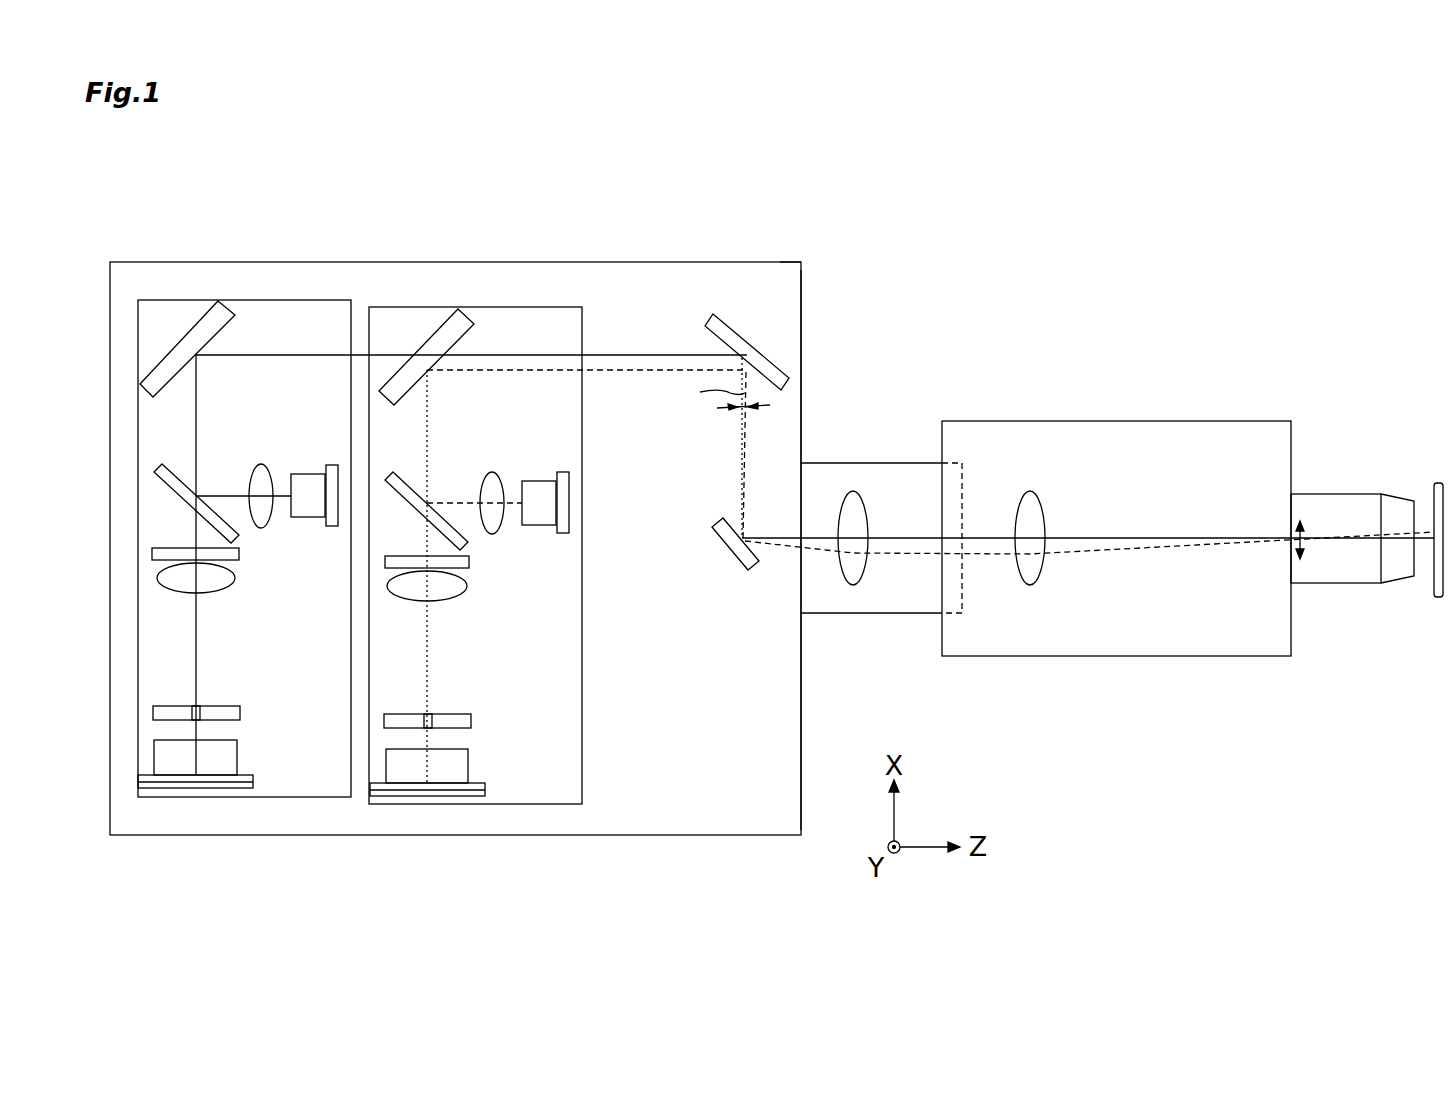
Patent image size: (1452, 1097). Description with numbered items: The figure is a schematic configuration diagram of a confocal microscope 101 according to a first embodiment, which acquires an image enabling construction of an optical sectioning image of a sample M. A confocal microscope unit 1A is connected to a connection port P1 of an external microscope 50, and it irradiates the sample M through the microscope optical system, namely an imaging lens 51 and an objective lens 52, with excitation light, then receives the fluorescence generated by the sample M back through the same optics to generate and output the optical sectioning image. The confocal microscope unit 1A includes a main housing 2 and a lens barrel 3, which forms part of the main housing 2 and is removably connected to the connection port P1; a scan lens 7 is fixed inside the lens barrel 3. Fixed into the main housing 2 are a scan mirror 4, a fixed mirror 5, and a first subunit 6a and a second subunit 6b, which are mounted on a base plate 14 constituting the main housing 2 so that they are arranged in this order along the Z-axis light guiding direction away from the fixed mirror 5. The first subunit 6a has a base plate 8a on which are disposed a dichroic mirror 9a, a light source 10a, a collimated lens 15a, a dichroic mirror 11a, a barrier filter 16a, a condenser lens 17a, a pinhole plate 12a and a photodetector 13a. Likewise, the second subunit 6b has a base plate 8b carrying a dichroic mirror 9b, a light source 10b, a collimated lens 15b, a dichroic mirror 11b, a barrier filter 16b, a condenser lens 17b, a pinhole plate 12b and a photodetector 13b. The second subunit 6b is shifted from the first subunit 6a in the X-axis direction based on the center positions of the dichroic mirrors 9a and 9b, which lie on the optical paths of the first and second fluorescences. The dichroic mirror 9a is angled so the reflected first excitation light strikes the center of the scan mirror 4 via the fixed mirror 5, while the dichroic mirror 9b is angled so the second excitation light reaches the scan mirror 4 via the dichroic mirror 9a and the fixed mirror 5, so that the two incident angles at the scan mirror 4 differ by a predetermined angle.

The confocal microscope 101 is at (1050, 258).
The confocal microscope unit 1A is at (793, 259).
The main housing 2 is at (677, 262).
The lens barrel 3 is at (877, 462).
The scan mirror 4 is at (733, 566).
The fixed mirror 5 is at (735, 320).
The first subunit 6a is at (557, 805).
The second subunit 6b is at (325, 800).
The scan lens 7 is at (851, 585).
The base plate 8a is at (426, 285).
The base plate 8b is at (187, 281).
The dichroic mirror 9a is at (437, 325).
The dichroic mirror 9b is at (205, 318).
The light source 10a is at (540, 481).
The light source 10b is at (310, 474).
The dichroic mirror 11a is at (448, 517).
The dichroic mirror 11b is at (217, 510).
The pinhole plate 12a is at (447, 722).
The pinhole plate 12b is at (215, 714).
The photodetector 13a is at (400, 788).
The photodetector 13b is at (170, 788).
The base plate 14 is at (790, 310).
The collimated lens 15a is at (492, 472).
The collimated lens 15b is at (261, 464).
The barrier filter 16a is at (472, 558).
The barrier filter 16b is at (243, 553).
The condenser lens 17a is at (457, 600).
The condenser lens 17b is at (228, 592).
The microscope 50 is at (1120, 421).
The imaging lens 51 is at (1030, 585).
The objective lens 52 is at (1340, 494).
The connection port P1 is at (962, 490).
The sample M is at (1438, 483).